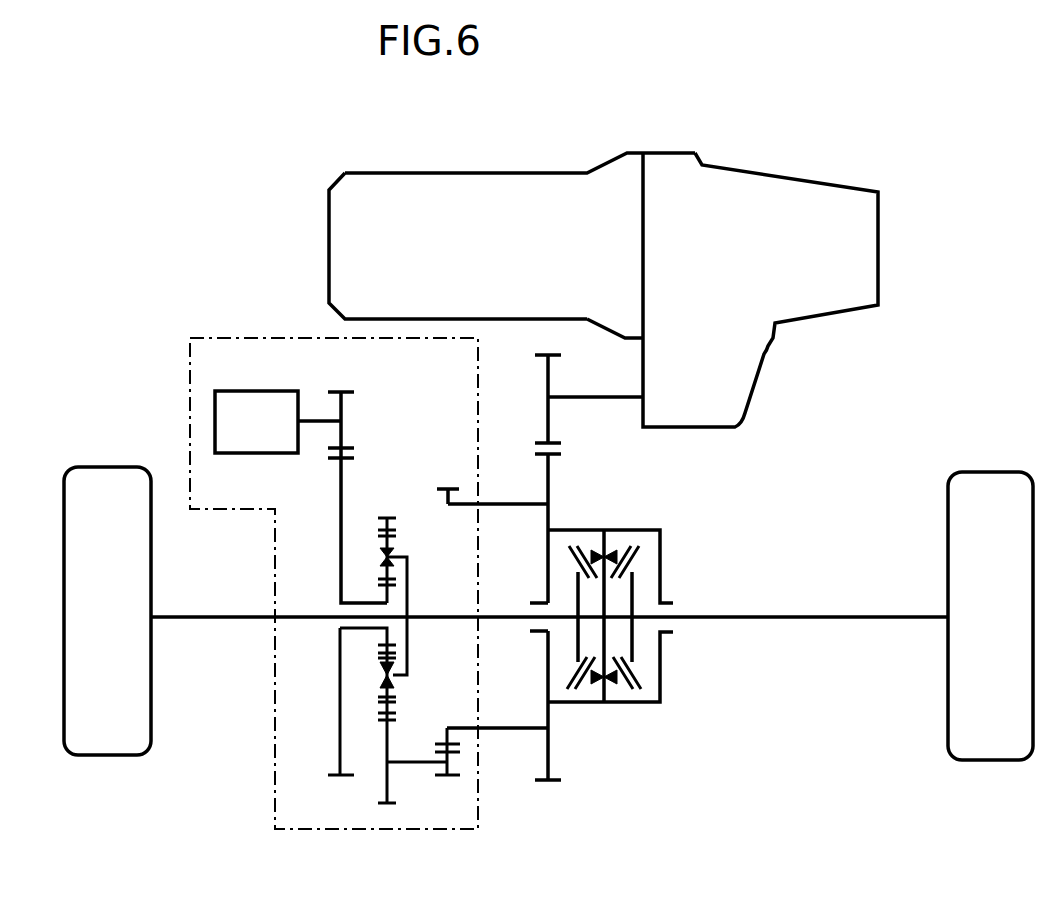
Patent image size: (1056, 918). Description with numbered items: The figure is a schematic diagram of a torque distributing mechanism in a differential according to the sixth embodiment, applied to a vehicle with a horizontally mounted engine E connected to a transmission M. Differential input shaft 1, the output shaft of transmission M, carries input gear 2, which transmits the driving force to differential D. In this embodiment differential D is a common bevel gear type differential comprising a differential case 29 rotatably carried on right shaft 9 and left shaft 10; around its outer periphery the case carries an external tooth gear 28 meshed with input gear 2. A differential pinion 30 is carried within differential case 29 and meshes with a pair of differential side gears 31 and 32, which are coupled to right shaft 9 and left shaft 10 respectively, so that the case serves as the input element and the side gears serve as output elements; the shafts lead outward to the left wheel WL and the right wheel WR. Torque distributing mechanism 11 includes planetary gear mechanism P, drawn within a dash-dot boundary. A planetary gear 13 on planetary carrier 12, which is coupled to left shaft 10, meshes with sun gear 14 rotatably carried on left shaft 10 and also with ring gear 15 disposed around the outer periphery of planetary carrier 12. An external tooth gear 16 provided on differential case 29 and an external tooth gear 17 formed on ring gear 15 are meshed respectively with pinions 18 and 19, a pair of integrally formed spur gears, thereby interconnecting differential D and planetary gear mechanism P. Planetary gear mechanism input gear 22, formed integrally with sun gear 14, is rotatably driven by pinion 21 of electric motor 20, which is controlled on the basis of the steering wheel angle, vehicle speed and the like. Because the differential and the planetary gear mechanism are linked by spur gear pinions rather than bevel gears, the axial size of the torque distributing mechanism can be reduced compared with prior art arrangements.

The differential input shaft 1 is at (590, 397).
The input gear 2 is at (535, 446).
The right shaft 9 is at (742, 617).
The left shaft 10 is at (228, 617).
The torque distributing mechanism 11 is at (275, 740).
The planetary carrier 12 is at (410, 572).
The planetary gear 13 is at (396, 534).
The sun gear 14 is at (379, 648).
The ring gear 15 is at (378, 697).
The external tooth gear 16 is at (462, 748).
The external tooth gear 17 is at (396, 715).
The pinion 18 is at (440, 780).
The pinion 19 is at (382, 805).
The electric motor 20 is at (262, 391).
The pinion 21 is at (348, 450).
The planetary gear mechanism input gear 22 is at (352, 460).
The external tooth gear 28 is at (562, 454).
The differential case 29 is at (627, 530).
The differential pinion 30 is at (578, 546).
The differential side gear 31 is at (640, 672).
The differential side gear 32 is at (568, 680).
The engine E is at (333, 286).
The transmission M is at (823, 300).
The planetary gear mechanism P is at (297, 515).
The differential D is at (692, 552).
The left wheel WL is at (108, 467).
The right wheel WR is at (976, 472).